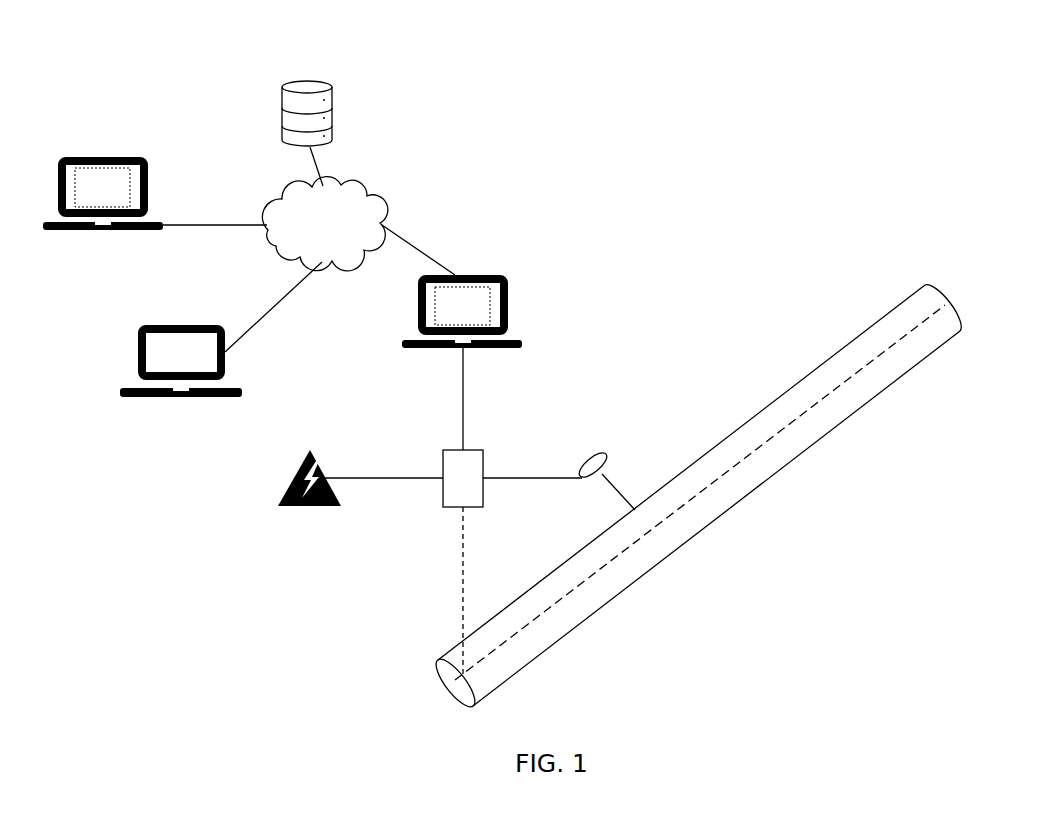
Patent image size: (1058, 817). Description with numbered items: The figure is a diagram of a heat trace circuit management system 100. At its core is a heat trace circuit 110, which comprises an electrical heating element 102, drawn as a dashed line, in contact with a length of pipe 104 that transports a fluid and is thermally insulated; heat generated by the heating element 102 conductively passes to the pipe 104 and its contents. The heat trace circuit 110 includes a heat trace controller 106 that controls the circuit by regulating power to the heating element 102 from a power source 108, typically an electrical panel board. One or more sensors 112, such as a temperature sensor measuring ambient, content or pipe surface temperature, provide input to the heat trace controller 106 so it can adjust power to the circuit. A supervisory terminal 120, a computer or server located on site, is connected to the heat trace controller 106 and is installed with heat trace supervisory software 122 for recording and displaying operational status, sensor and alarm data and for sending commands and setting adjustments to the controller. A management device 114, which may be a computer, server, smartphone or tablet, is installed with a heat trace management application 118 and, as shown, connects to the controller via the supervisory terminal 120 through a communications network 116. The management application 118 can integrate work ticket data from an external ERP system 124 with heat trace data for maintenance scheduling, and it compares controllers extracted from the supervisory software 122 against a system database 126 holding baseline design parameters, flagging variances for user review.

The heat trace circuit management system 100 is at (501, 85).
The electrical heating element 102 is at (858, 372).
The pipe 104 is at (680, 547).
The heat trace controller 106 is at (470, 507).
The power source 108 is at (313, 450).
The heat trace circuit 110 is at (553, 437).
The sensor 112 is at (603, 452).
The management device 114 is at (110, 176).
The communications network 116 is at (370, 192).
The heat trace management application 118 is at (103, 187).
The supervisory terminal 120 is at (470, 294).
The heat trace supervisory software 122 is at (463, 305).
The external ERP system 124 is at (190, 323).
The system database 126 is at (330, 85).